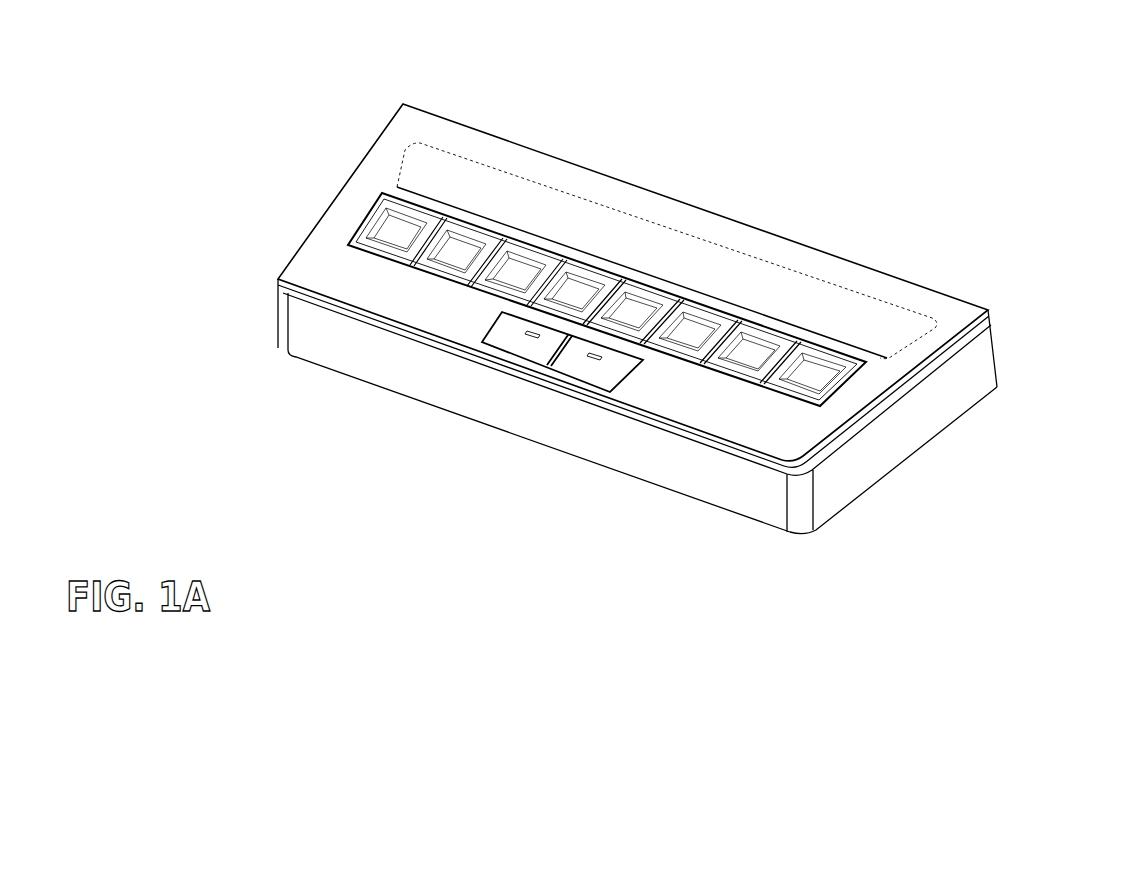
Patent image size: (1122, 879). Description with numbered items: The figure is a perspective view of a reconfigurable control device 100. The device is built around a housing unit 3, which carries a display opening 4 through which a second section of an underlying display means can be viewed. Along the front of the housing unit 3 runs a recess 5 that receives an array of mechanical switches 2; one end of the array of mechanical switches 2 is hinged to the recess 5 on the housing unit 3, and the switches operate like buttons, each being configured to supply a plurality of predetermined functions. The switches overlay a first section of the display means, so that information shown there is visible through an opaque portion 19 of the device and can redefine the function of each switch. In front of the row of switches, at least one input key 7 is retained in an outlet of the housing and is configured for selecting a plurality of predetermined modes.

The reconfigurable control device 100 is at (653, 282).
The opaque portion 19 is at (397, 227).
The display opening 4 is at (859, 312).
The recess 5 is at (993, 310).
The housing unit 3 is at (961, 394).
The array of mechanical switches 2 is at (810, 395).
The input key 7 is at (518, 343).